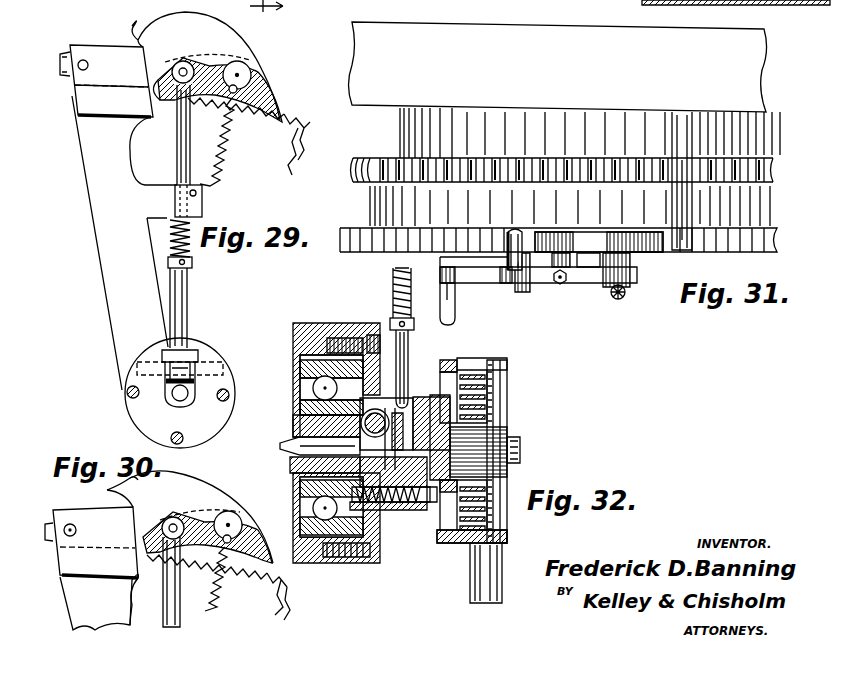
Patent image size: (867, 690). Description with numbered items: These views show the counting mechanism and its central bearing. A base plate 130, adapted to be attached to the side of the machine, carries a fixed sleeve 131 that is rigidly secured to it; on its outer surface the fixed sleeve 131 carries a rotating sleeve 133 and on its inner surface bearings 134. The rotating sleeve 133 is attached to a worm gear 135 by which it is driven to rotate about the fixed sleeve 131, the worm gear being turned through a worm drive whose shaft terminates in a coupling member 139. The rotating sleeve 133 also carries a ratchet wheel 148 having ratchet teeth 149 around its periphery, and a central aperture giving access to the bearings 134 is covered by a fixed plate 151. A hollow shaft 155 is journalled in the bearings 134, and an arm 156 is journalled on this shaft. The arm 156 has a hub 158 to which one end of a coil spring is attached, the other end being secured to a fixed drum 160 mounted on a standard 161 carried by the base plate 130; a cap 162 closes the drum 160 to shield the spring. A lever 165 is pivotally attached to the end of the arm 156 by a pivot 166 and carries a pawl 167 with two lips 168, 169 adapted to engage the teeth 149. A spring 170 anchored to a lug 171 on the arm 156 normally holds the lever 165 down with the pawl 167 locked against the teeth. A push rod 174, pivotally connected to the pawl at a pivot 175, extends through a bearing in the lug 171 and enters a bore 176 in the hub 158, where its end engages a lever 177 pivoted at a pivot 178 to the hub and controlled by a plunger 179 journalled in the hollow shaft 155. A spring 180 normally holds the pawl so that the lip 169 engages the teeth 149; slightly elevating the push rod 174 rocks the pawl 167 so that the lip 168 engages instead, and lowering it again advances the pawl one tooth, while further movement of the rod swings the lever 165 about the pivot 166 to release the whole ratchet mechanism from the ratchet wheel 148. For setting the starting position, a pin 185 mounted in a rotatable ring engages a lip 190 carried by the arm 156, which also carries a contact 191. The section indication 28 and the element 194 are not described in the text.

In FIG. 29, the section line arrow 28 is at (266, 14).
In FIG. 31, the base plate 130 is at (540, 12).
In FIG. 31, the fixed sleeve 131 is at (585, 104).
In FIG. 32, the fixed sleeve 131 is at (317, 562).
In FIG. 31, the rotating sleeve 133 is at (760, 217).
In FIG. 32, the rotating sleeve 133 is at (297, 323).
In FIG. 32, the bearings 134 is at (320, 372).
In FIG. 31, the worm gear 135 is at (522, 173).
In FIG. 32, the coupling member 139 is at (480, 402).
In FIG. 29, the ratchet wheel 148 is at (296, 140).
In FIG. 30, the ratchet wheel 148 is at (290, 605).
In FIG. 30, the ratchet teeth 149 is at (253, 570).
In FIG. 31, the ratchet teeth 149 is at (348, 225).
In FIG. 32, the fixed plate 151 is at (385, 347).
In FIG. 32, the hollow shaft 155 is at (300, 425).
In FIG. 29, the arm 156 is at (110, 237).
In FIG. 30, the arm 156 is at (85, 608).
In FIG. 31, the arm 156 is at (500, 287).
In FIG. 29, the hub 158 is at (147, 408).
In FIG. 32, the hub 158 is at (432, 513).
In FIG. 32, the fixed drum 160 is at (497, 363).
In FIG. 32, the standard 161 is at (487, 577).
In FIG. 32, the cap 162 is at (493, 418).
In FIG. 29, the lever 165 is at (187, 32).
In FIG. 30, the lever 165 is at (198, 483).
In FIG. 31, the lever 165 is at (590, 277).
In FIG. 29, the pivot 166 is at (84, 60).
In FIG. 29, the pawl 167 is at (268, 82).
In FIG. 31, the pawl 167 is at (637, 247).
In FIG. 29, the lip 168 is at (270, 117).
In FIG. 30, the lip 168 is at (268, 550).
In FIG. 29, the lip 169 is at (162, 110).
In FIG. 30, the lip 169 is at (140, 563).
In FIG. 29, the spring 170 is at (217, 155).
In FIG. 30, the spring 170 is at (203, 603).
In FIG. 31, the spring 170 is at (618, 300).
In FIG. 29, the lug 171 is at (200, 215).
In FIG. 31, the lug 171 is at (562, 287).
In FIG. 29, the push rod 174 is at (188, 297).
In FIG. 30, the push rod 174 is at (167, 613).
In FIG. 29, the pivot 175 is at (185, 68).
In FIG. 30, the pivot 175 is at (200, 510).
In FIG. 29, the bore 176 is at (190, 347).
In FIG. 32, the bore 176 is at (393, 410).
In FIG. 29, the lever 177 is at (180, 366).
In FIG. 32, the lever 177 is at (425, 508).
In FIG. 32, the pivot 178 is at (387, 477).
In FIG. 29, the plunger 179 is at (178, 410).
In FIG. 32, the plunger 179 is at (300, 447).
In FIG. 29, the spring 180 is at (173, 238).
In FIG. 31, the pin 185 is at (697, 117).
In FIG. 29, the lip 190 is at (147, 22).
In FIG. 30, the lip 190 is at (140, 482).
In FIG. 31, the lip 190 is at (528, 220).
In FIG. 29, the contact 191 is at (63, 68).
In FIG. 30, the contact 191 is at (58, 512).
In FIG. 31, the contact 191 is at (433, 318).
In FIG. 31, the bar 194 is at (787, 3).